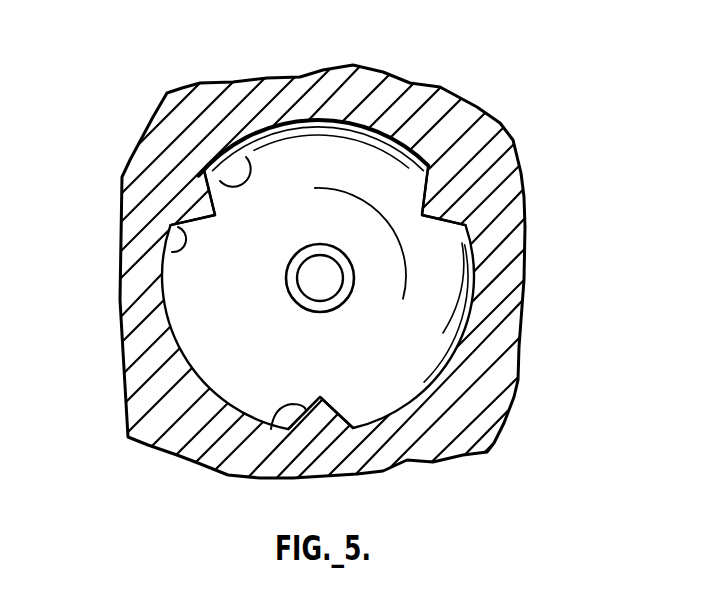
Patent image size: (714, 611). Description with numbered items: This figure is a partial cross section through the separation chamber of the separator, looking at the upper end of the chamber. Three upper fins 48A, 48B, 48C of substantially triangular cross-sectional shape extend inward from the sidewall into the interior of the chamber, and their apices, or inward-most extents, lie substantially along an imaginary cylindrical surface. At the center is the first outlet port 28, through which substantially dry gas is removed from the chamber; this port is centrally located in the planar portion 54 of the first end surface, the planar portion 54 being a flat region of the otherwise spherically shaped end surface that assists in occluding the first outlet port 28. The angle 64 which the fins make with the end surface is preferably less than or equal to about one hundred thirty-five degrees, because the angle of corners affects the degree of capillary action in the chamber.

The first outlet port 28 is at (327, 262).
The upper fin 48A is at (470, 246).
The upper fin 48B is at (165, 254).
The upper fin 48C is at (287, 437).
The planar portion 54 is at (342, 297).
The angle 64 is at (245, 160).